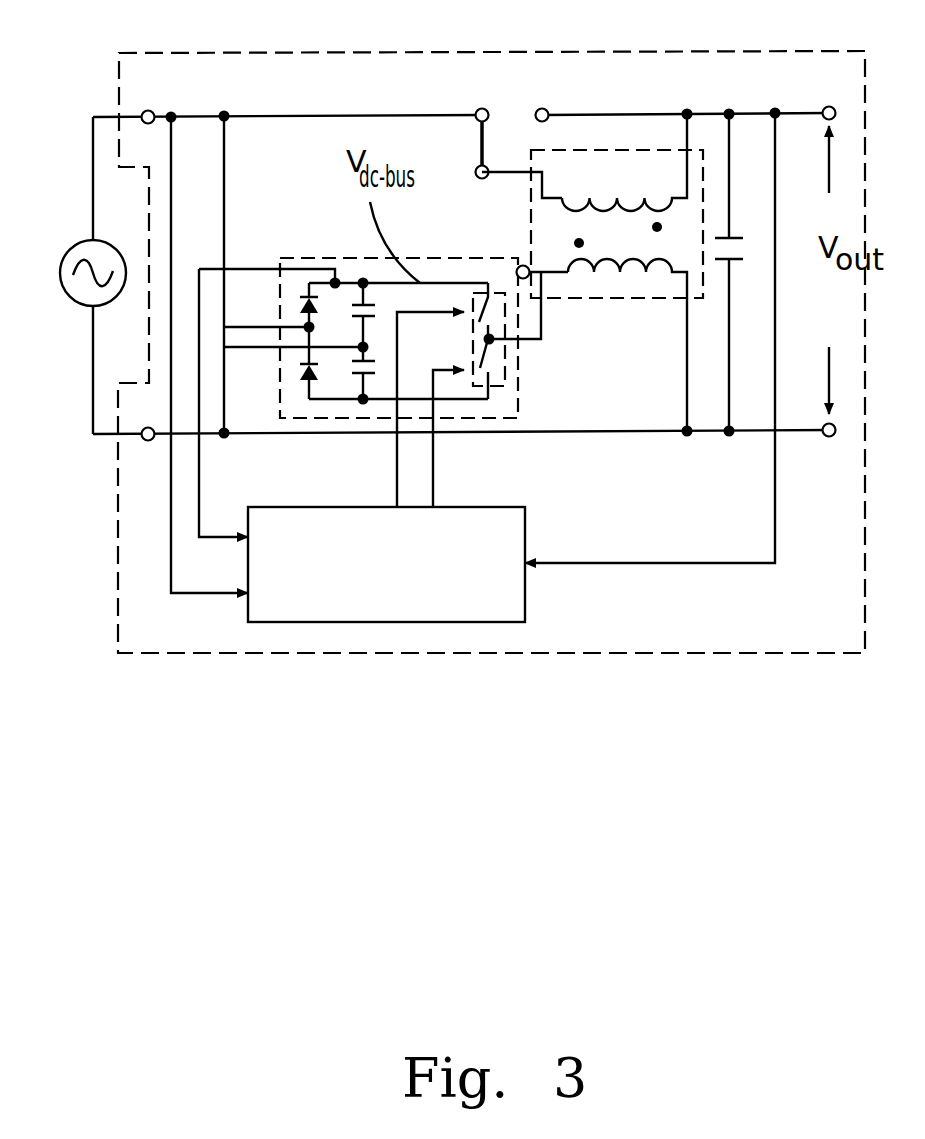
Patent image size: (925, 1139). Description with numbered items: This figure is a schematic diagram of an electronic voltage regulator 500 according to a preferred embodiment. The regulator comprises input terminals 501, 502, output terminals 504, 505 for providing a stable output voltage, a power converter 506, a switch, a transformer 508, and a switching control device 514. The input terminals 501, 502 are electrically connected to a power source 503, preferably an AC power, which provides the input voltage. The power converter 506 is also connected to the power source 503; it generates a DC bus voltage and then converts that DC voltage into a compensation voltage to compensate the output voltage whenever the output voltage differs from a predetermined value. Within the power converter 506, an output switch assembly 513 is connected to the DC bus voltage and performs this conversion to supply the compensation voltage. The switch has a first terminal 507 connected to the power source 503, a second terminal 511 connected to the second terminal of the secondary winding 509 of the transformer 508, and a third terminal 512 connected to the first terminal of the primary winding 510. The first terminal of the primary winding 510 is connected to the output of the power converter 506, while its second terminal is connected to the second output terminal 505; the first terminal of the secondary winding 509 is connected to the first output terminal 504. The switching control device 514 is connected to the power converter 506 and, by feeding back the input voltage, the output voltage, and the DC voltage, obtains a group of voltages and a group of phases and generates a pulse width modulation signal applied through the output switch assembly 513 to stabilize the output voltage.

The electronic voltage regulator 500 is at (383, 65).
The input terminal 501 is at (150, 95).
The input terminal 502 is at (148, 454).
The power source 503 is at (73, 282).
The first output terminal 504 is at (829, 91).
The second output terminal 505 is at (826, 452).
The power converter 506 is at (348, 270).
The first terminal of the switch 507 is at (505, 93).
The transformer 508 is at (617, 272).
The secondary winding 509 is at (624, 162).
The primary winding 510 is at (627, 345).
The second terminal of the switch 511 is at (502, 147).
The third terminal of the switch 512 is at (520, 266).
The output switch assembly 513 is at (474, 300).
The switching control device 514 is at (510, 527).